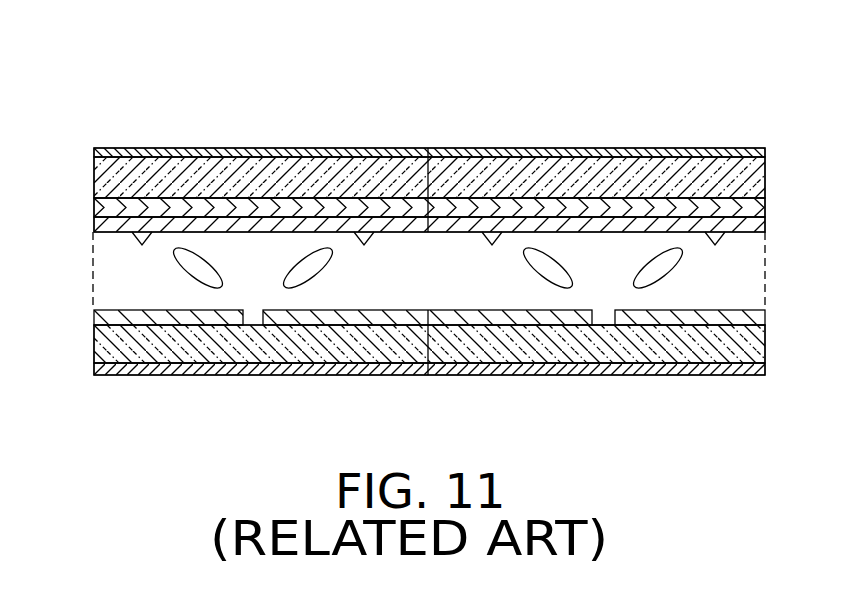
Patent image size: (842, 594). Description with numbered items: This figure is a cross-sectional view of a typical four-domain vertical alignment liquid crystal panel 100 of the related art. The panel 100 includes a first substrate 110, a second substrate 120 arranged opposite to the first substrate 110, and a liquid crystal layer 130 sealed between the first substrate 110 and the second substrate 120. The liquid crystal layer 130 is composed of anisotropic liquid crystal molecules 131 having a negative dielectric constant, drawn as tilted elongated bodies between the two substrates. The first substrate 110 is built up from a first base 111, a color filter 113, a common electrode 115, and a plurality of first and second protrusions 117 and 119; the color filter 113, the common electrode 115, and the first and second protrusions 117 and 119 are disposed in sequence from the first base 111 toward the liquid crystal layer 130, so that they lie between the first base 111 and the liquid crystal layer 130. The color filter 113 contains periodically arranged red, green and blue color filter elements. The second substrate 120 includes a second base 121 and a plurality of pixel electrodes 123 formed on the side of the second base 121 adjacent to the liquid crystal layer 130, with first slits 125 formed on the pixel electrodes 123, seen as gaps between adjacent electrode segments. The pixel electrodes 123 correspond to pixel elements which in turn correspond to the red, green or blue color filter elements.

The four-domain vertical alignment liquid crystal panel 100 is at (426, 223).
The first substrate 110 is at (770, 143).
The first base 111 is at (103, 176).
The color filter 113 is at (103, 210).
The common electrode 115 is at (103, 222).
The first protrusions 117 is at (143, 240).
The second protrusions 119 is at (365, 240).
The liquid crystal layer 130 is at (770, 240).
The liquid crystal molecules 131 is at (547, 268).
The second substrate 120 is at (770, 312).
The second base 121 is at (100, 352).
The pixel electrodes 123 is at (100, 318).
The first slits 125 is at (602, 318).